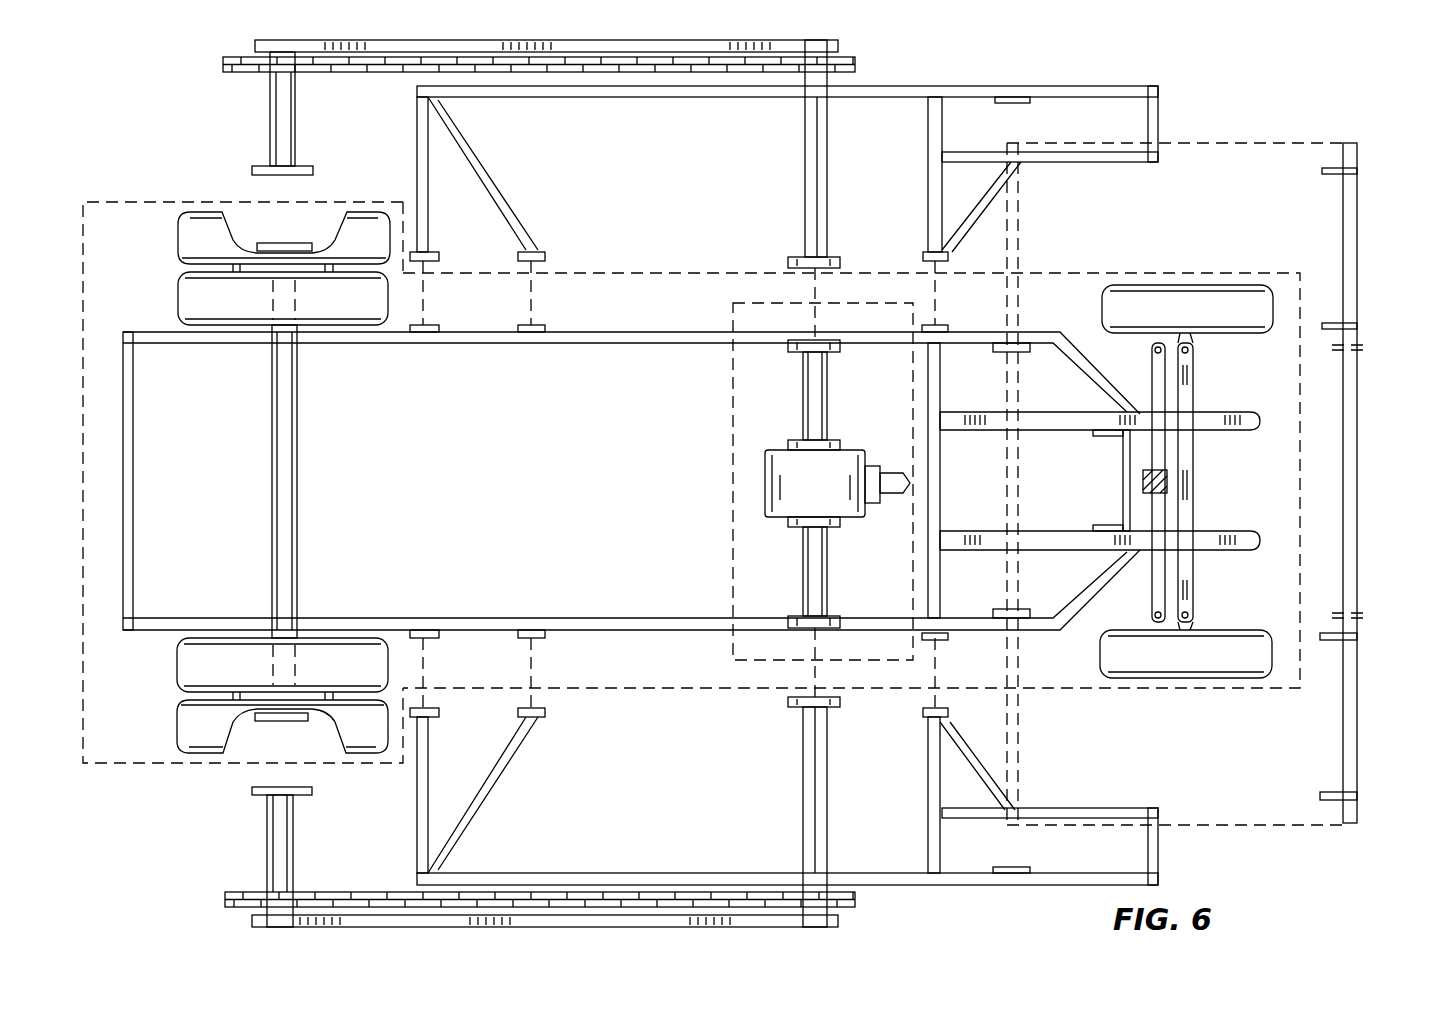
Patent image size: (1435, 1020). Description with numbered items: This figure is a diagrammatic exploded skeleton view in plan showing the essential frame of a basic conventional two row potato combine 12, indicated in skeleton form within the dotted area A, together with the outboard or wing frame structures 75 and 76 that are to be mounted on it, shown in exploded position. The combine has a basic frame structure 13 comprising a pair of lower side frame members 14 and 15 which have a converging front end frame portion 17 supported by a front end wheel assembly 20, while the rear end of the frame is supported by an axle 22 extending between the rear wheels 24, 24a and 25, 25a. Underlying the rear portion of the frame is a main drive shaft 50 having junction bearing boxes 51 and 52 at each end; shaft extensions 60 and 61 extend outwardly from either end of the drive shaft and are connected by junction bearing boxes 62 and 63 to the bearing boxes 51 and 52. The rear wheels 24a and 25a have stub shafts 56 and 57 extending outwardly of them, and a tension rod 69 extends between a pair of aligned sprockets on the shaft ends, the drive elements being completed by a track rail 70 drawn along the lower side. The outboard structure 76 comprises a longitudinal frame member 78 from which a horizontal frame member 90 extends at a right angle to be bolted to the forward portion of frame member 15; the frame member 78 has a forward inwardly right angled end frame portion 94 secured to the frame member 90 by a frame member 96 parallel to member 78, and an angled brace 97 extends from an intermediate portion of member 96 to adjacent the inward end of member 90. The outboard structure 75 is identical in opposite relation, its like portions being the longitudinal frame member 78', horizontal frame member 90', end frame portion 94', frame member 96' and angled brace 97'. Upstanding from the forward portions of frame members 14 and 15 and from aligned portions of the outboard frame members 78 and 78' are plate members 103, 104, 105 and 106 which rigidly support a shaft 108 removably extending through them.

The two row combine structure 12 is at (1298, 308).
The basic frame structure 13 is at (691, 482).
The lower side frame member 14 is at (400, 343).
The lower side frame member 15 is at (355, 618).
The converging front end frame portion 17 is at (1135, 355).
The front end wheel assembly 20 is at (1242, 676).
The axle 22 is at (270, 405).
The rear wheel 24 is at (178, 295).
The rear wheel 24a is at (185, 240).
The rear wheel 25 is at (177, 668).
The rear wheel 25a is at (180, 730).
The main drive shaft 50 is at (790, 484).
The junction bearing box 51 is at (790, 348).
The junction bearing box 52 is at (790, 618).
The stub shaft 56 is at (285, 122).
The stub shaft 57 is at (267, 848).
The shaft extension 60 is at (805, 158).
The shaft extension 61 is at (803, 813).
The junction bearing box 62 is at (790, 263).
The junction bearing box 63 is at (788, 701).
The tension rod 69 is at (810, 35).
The track rail 70 is at (690, 920).
The outboard frame structure 75 is at (834, 154).
The outboard frame structure 76 is at (821, 818).
The longitudinal frame member 78 is at (787, 906).
The longitudinal frame member 78' is at (787, 68).
The horizontal frame member 90 is at (906, 790).
The horizontal frame member 90' is at (911, 179).
The end frame portion 94 is at (1087, 874).
The end frame portion 94' is at (1100, 113).
The frame member 96 is at (1050, 831).
The frame member 96' is at (1073, 169).
The angled brace 97 is at (1014, 766).
The angled brace 97' is at (1023, 207).
The plate member 103 is at (1010, 95).
The plate member 104 is at (1018, 355).
The plate member 105 is at (1030, 615).
The plate member 106 is at (1010, 875).
The shaft 108 is at (1358, 450).
The dotted area A is at (1208, 260).